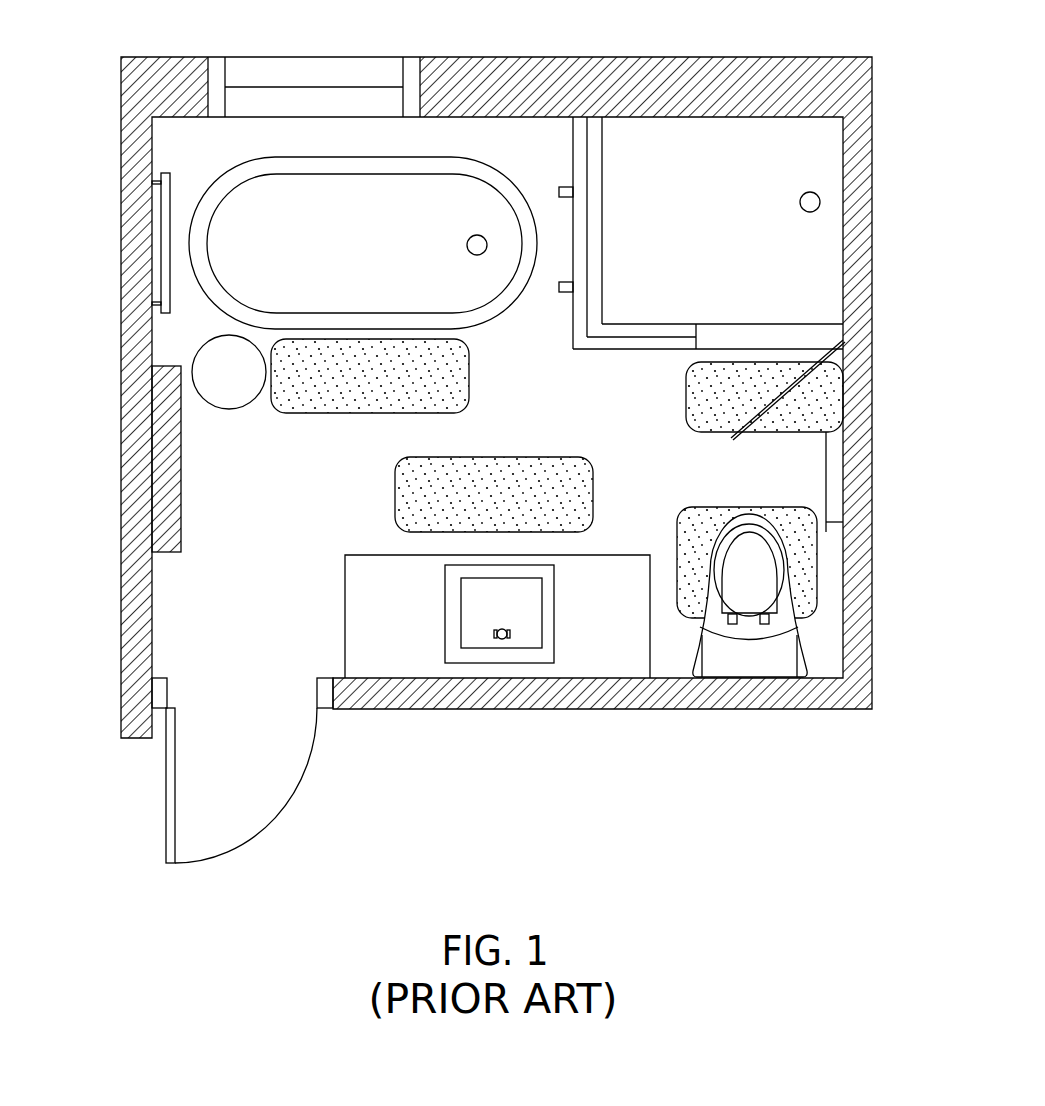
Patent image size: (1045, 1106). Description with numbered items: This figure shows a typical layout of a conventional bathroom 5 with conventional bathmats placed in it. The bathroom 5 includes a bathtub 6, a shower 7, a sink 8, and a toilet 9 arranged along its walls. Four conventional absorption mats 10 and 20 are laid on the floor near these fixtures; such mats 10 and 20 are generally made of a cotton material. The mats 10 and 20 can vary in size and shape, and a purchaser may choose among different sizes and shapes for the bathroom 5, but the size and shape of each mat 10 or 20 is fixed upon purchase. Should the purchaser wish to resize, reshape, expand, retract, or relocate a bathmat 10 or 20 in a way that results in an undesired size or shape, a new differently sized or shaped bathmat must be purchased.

The bathroom 5 is at (103, 126).
The bathtub 6 is at (433, 157).
The shower 7 is at (820, 252).
The sink 8 is at (500, 656).
The toilet 9 is at (797, 593).
The conventional bathroom mat 10 is at (469, 375).
The conventional bathroom mat 20 is at (817, 512).